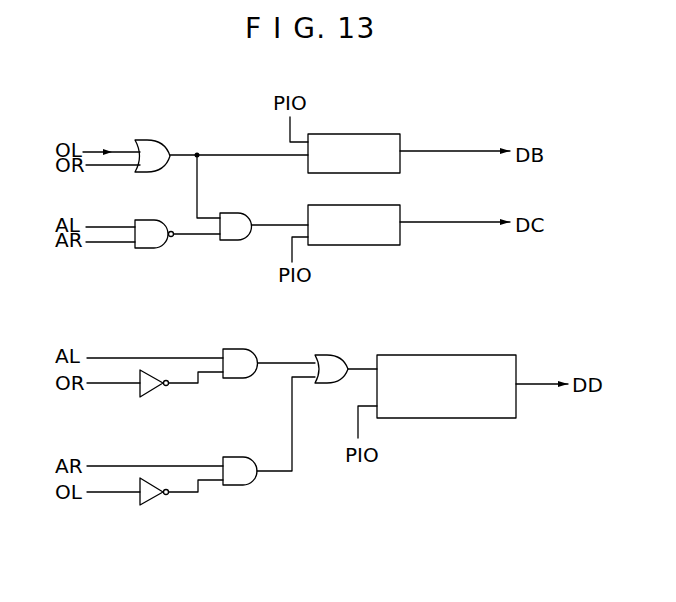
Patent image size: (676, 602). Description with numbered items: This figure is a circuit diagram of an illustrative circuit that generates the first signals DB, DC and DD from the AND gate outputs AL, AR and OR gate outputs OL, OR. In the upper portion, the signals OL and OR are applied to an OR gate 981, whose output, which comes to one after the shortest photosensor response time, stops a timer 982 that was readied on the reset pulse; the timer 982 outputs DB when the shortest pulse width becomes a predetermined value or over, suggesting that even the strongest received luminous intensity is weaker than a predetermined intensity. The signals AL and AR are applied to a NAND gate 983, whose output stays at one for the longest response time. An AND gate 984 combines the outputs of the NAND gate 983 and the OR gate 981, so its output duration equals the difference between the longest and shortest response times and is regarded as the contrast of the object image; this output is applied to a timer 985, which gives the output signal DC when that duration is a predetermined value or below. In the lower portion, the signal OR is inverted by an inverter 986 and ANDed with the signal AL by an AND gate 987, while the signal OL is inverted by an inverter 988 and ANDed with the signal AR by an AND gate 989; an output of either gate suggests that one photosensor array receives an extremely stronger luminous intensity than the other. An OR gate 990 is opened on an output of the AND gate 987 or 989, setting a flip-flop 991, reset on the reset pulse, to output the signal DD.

The OR gate 981 is at (152, 140).
The timer 982 is at (365, 133).
The NAND gate 983 is at (153, 248).
The AND gate 984 is at (238, 240).
The timer 985 is at (362, 245).
The inverter 986 is at (163, 397).
The AND gate 987 is at (237, 349).
The inverter 988 is at (162, 500).
The AND gate 989 is at (242, 485).
The OR gate 990 is at (328, 353).
The flip-flop 991 is at (447, 355).